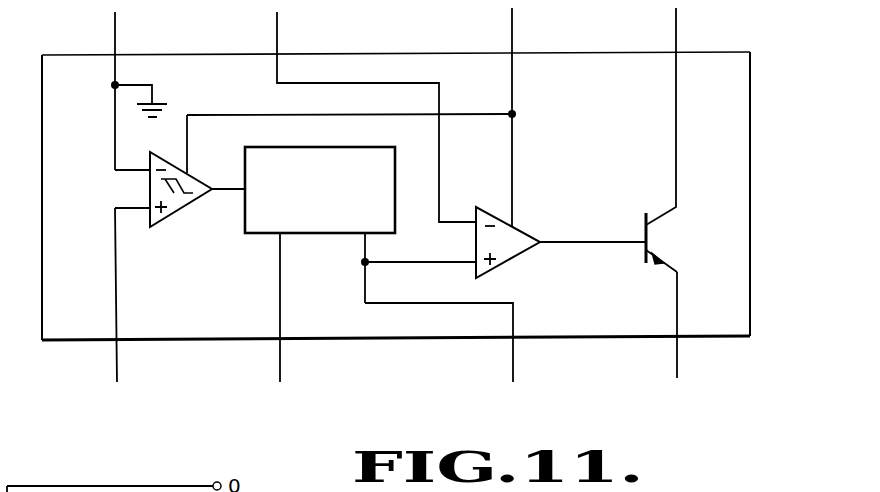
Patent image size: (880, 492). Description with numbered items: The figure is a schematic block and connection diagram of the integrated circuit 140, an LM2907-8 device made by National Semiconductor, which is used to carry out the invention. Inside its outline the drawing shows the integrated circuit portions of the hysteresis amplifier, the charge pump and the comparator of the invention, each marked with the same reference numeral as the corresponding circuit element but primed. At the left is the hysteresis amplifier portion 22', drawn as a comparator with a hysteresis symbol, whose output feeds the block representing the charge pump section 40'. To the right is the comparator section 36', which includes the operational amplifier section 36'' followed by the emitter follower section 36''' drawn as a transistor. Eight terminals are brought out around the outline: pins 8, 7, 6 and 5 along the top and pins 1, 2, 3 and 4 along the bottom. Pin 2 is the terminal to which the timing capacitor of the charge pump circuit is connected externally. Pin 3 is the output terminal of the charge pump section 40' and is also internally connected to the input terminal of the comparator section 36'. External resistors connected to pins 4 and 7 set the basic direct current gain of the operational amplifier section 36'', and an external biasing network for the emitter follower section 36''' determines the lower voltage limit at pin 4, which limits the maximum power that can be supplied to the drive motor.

The integrated circuit 140 is at (237, 373).
The hysteresis amplifier integrated circuit portion 22' is at (313, 192).
The charge pump section 40' is at (320, 214).
The comparator section 36' is at (587, 346).
The operational amplifier section 36'' is at (503, 245).
The emitter follower section 36''' is at (693, 236).
The pin 1 is at (126, 295).
The pin 2 is at (293, 307).
The pin 3 is at (449, 342).
The pin 4 is at (688, 325).
The pin 5 is at (670, 116).
The pin 6 is at (519, 117).
The pin 7 is at (376, 117).
The pin 8 is at (123, 91).